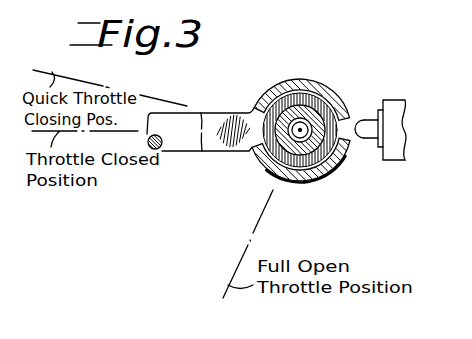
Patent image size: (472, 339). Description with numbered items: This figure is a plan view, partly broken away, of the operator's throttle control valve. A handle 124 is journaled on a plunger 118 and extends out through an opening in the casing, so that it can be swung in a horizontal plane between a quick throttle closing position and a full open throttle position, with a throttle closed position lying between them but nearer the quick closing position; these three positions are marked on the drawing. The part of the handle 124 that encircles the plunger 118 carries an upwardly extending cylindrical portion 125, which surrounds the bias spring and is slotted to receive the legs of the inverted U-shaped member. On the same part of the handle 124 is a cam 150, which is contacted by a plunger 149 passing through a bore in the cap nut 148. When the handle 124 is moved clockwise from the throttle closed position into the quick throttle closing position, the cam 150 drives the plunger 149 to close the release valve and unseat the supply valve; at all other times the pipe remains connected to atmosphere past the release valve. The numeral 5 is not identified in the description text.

The throttle cam sector 5 is at (318, 82).
The plunger 118 is at (272, 93).
The handle 124 is at (186, 147).
The cylindrical portion 125 is at (313, 84).
The cap nut 148 is at (377, 160).
The plunger 149 is at (362, 125).
The cam 150 is at (359, 122).